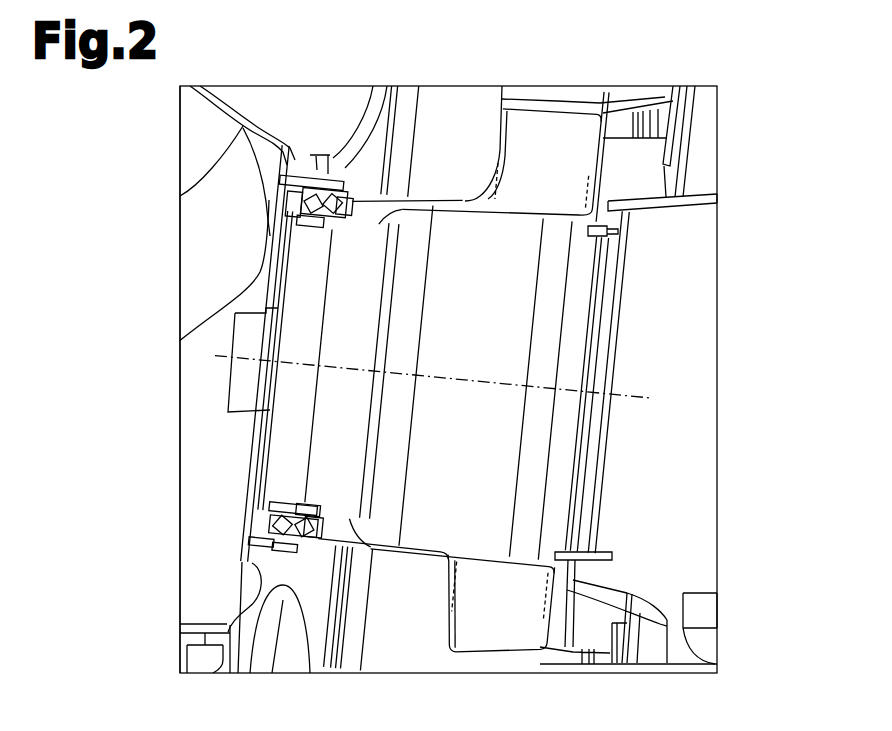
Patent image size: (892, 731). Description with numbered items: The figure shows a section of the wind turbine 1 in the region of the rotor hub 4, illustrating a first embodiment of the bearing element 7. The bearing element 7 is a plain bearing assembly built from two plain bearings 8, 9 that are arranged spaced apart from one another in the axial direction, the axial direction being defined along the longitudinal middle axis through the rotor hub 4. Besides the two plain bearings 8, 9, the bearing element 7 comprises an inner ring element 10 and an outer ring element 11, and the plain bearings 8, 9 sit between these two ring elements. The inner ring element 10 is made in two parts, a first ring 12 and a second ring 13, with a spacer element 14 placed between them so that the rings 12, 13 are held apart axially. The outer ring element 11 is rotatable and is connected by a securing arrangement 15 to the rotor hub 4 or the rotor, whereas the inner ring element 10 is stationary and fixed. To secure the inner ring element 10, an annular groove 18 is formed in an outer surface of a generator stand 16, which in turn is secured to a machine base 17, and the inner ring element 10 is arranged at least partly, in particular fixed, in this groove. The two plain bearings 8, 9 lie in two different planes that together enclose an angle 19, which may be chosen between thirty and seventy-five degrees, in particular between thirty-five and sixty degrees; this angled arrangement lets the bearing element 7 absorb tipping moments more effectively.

The wind turbine 1 is at (168, 556).
The rotor hub 4 is at (218, 420).
The bearing element 7 is at (316, 160).
The plain bearing 8 is at (294, 203).
The plain bearing 9 is at (347, 189).
The inner ring element 10 is at (324, 542).
The outer ring element 11 is at (286, 564).
The first ring 12 is at (298, 500).
The second ring 13 is at (318, 504).
The spacer element 14 is at (301, 516).
The securing arrangement 15 is at (253, 556).
The generator stand 16 is at (483, 508).
The machine base 17 is at (688, 327).
The annular groove 18 is at (337, 220).
The angle 19 is at (327, 176).